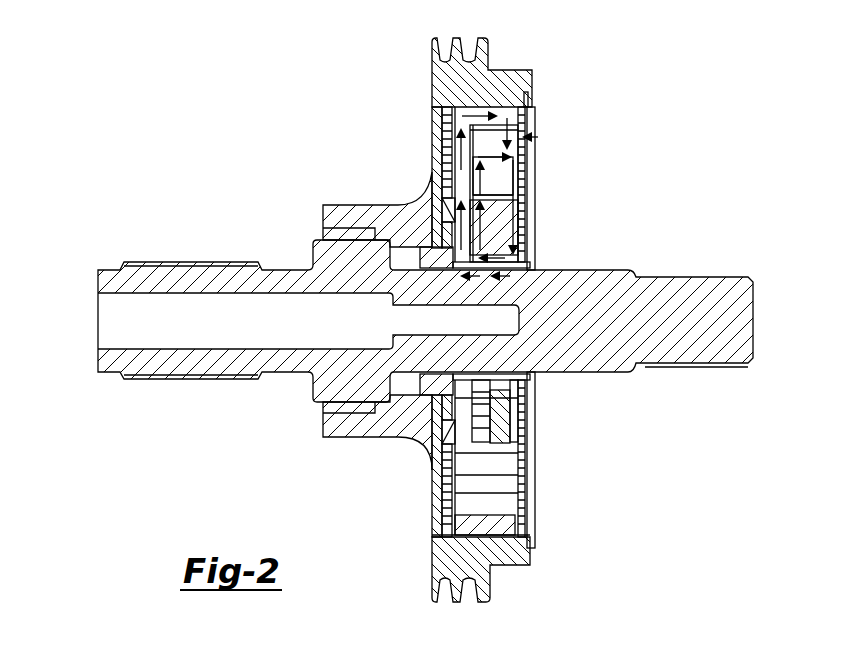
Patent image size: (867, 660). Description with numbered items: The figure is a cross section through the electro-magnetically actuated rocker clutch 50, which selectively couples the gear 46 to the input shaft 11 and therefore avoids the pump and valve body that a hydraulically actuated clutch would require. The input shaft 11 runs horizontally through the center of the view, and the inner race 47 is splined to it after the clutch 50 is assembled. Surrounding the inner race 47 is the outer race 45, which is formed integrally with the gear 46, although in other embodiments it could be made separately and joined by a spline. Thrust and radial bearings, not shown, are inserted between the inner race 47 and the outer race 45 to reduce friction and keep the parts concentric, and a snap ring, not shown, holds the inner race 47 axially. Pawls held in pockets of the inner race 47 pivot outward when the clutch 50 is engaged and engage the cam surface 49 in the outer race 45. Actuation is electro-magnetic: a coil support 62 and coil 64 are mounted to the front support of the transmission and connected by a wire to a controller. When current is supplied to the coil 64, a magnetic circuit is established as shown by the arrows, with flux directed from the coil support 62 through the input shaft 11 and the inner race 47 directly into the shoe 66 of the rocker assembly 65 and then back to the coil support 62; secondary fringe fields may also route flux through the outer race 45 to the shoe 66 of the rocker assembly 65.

The input shaft 11 is at (577, 278).
The outer race 45 is at (513, 92).
The gear 46 is at (440, 56).
The inner race 47 is at (512, 118).
The cam surface 49 is at (465, 107).
The clutch 50 is at (321, 200).
The coil support 62 is at (480, 413).
The coil 64 is at (505, 420).
The rocker assembly 65 is at (538, 137).
The shoe 66 is at (525, 165).